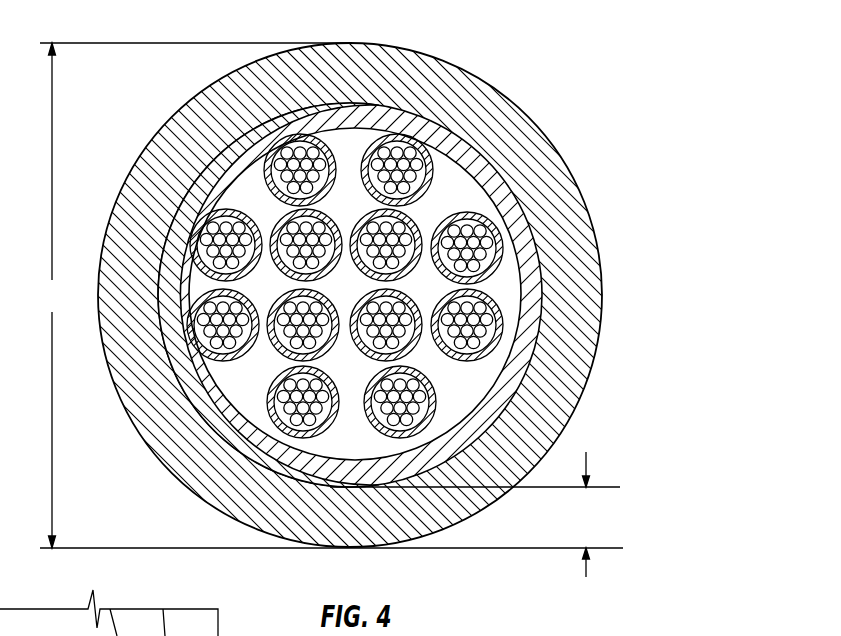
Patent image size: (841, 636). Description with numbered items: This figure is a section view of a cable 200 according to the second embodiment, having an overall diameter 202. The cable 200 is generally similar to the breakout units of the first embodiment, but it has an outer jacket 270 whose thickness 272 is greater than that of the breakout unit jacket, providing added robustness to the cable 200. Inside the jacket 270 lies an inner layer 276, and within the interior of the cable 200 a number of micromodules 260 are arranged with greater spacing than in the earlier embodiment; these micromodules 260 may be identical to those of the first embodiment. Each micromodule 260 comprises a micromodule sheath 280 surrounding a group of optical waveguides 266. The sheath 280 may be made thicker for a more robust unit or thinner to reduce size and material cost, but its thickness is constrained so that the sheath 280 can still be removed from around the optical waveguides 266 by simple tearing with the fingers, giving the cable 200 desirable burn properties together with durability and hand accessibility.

The cable 200 is at (420, 273).
The diameter 202 is at (331, 295).
The micromodules 260 is at (399, 286).
The optical waveguides 266 is at (450, 343).
The jacket 270 is at (485, 101).
The thickness 272 is at (475, 514).
The inner sheath layer 276 is at (503, 191).
The micromodule sheath 280 is at (181, 372).